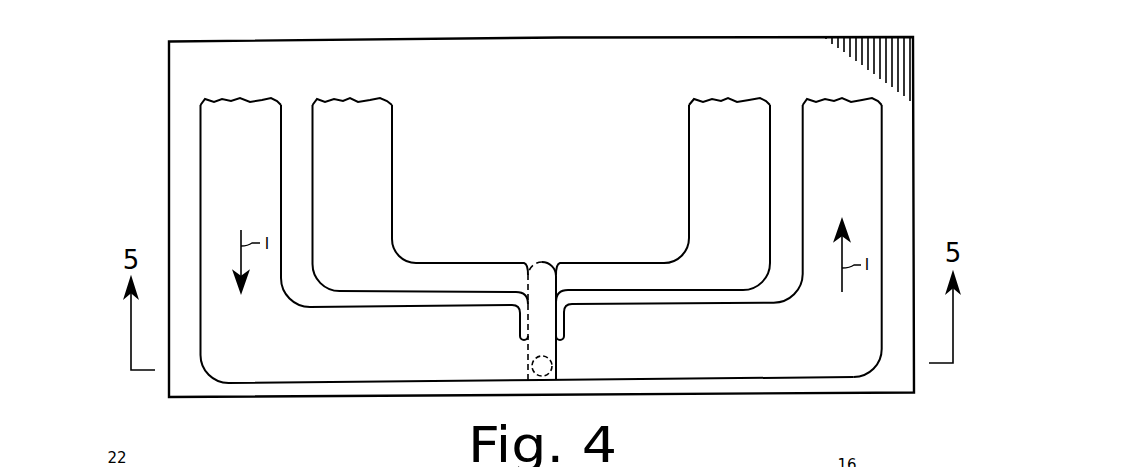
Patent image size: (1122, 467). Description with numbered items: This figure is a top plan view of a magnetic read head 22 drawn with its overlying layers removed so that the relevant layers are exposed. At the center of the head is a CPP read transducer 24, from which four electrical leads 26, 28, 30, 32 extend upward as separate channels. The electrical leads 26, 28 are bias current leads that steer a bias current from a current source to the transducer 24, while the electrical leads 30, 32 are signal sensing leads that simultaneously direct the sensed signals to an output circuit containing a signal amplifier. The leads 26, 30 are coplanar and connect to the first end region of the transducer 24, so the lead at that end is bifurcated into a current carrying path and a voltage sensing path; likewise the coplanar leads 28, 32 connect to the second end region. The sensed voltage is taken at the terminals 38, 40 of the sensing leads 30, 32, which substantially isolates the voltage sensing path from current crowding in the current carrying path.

The magnetic read head 22 is at (117, 133).
The CPP read transducer 24 is at (566, 365).
The electrical lead 26 is at (254, 177).
The electrical lead 28 is at (859, 189).
The electrical lead 30 is at (368, 177).
The electrical lead 32 is at (744, 177).
The terminal 38 is at (348, 98).
The terminal 40 is at (735, 97).